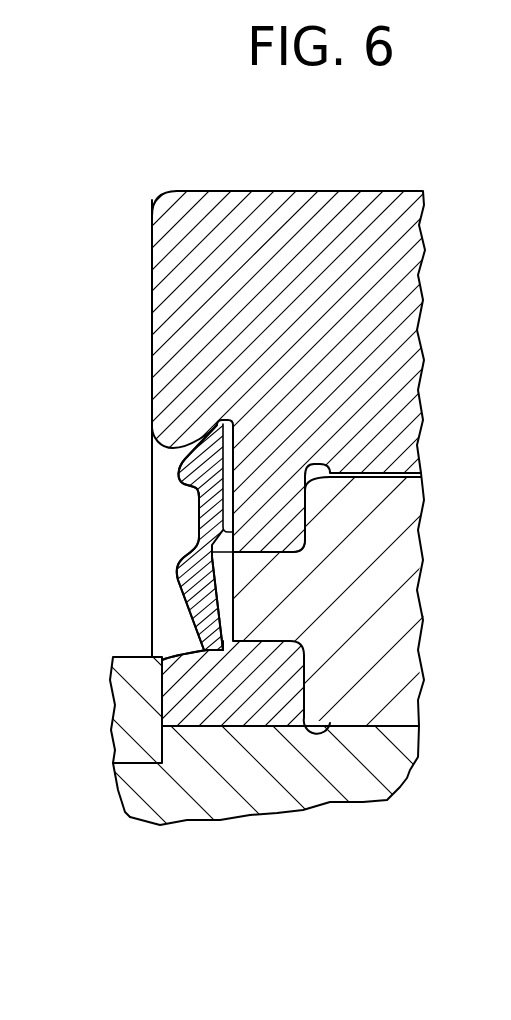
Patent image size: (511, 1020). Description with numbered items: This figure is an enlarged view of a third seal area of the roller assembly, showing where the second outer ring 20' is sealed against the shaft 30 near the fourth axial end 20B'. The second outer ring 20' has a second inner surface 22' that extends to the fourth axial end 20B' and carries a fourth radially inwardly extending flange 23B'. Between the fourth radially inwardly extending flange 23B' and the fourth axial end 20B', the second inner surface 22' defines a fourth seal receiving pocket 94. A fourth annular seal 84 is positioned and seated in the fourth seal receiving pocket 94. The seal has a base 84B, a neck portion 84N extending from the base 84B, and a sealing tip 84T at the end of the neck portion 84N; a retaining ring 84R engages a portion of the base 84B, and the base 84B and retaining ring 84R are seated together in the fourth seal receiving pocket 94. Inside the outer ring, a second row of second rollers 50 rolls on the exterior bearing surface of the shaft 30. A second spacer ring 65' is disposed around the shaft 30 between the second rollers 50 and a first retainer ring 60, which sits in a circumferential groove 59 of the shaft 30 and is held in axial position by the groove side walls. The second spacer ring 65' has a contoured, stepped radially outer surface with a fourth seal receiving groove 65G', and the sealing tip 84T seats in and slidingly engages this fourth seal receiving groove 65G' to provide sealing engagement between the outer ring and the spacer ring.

The second outer ring 20' is at (314, 399).
The fourth axial end 20B' is at (96, 428).
The fourth seal receiving pocket 94 is at (218, 420).
The fourth radially inwardly extending flange 23B' is at (364, 468).
The fourth annular seal 84 is at (202, 532).
The retaining ring 84R is at (183, 466).
The base 84B is at (178, 483).
The neck portion 84N is at (200, 508).
The sealing tip 84T is at (207, 632).
The second rollers 50 is at (390, 537).
The second inner surface 22' is at (349, 574).
The second spacer ring 65' is at (290, 755).
The fourth seal receiving groove 65G' is at (189, 767).
The first retainer ring 60 is at (120, 710).
The circumferential groove 59 is at (118, 757).
The shaft 30 is at (325, 792).